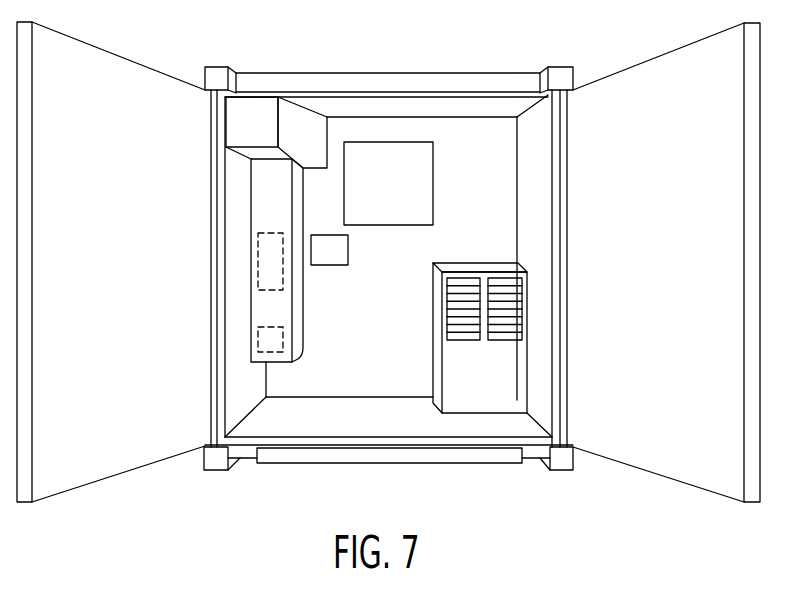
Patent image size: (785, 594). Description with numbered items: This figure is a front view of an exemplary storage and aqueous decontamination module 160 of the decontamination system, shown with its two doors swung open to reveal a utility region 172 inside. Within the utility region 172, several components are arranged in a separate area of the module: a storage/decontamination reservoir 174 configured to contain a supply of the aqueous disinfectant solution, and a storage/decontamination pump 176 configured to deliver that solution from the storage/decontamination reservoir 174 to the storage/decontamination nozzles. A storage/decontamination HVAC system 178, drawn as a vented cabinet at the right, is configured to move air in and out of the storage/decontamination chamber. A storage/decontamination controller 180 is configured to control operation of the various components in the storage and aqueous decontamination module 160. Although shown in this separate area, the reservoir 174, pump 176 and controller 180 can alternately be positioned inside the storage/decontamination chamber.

The storage and aqueous decontamination module 160 is at (352, 493).
The utility region 172 is at (418, 180).
The storage/decontamination reservoir 174 is at (322, 321).
The storage/decontamination pump 176 is at (322, 293).
The storage/decontamination HVAC system 178 is at (442, 363).
The storage/decontamination controller 180 is at (376, 245).